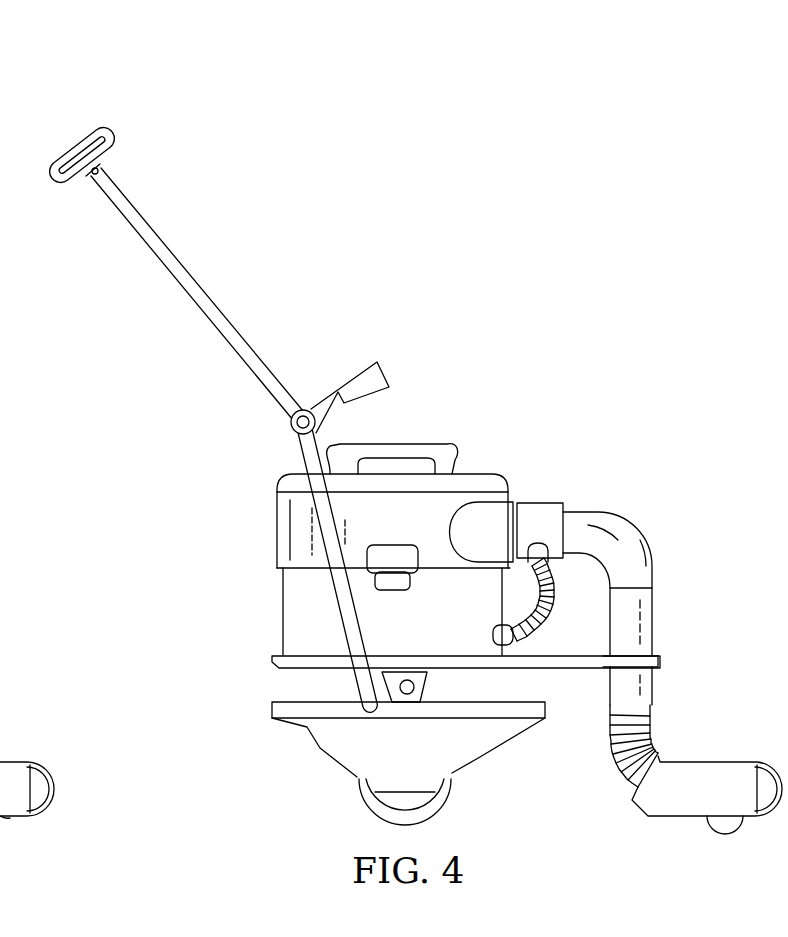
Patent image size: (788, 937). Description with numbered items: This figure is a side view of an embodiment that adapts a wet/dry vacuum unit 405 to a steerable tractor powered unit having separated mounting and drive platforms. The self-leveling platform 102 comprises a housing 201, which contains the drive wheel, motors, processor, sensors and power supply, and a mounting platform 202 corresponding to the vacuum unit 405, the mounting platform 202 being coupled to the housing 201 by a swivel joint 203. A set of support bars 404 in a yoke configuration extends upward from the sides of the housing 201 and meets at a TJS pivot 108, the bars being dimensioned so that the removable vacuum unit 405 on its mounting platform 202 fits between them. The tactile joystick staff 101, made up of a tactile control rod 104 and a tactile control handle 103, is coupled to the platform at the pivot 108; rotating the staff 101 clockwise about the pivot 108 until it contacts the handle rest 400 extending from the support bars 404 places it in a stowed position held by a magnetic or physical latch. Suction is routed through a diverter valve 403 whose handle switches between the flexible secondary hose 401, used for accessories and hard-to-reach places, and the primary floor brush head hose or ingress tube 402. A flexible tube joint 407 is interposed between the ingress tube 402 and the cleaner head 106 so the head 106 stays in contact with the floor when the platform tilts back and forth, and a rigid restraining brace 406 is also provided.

The tactile joystick staff 101 is at (240, 244).
The self-leveling platform 102 is at (287, 753).
The tactile control handle 103 is at (67, 148).
The tactile control rod 104 is at (250, 337).
The cleaner head 106 is at (686, 820).
The TJS pivot 108 is at (292, 432).
The housing 201 is at (333, 762).
The mounting platform 202 is at (275, 667).
The swivel joint 203 is at (407, 695).
The handle rest 400 is at (385, 368).
The secondary hose 401 is at (540, 622).
The ingress tube 402 is at (656, 605).
The diverter valve 403 is at (553, 503).
The support bars 404 is at (300, 454).
The wet/dry vacuum unit 405 is at (270, 587).
The rigid restraining brace 406 is at (657, 664).
The flexible tube joint 407 is at (655, 722).